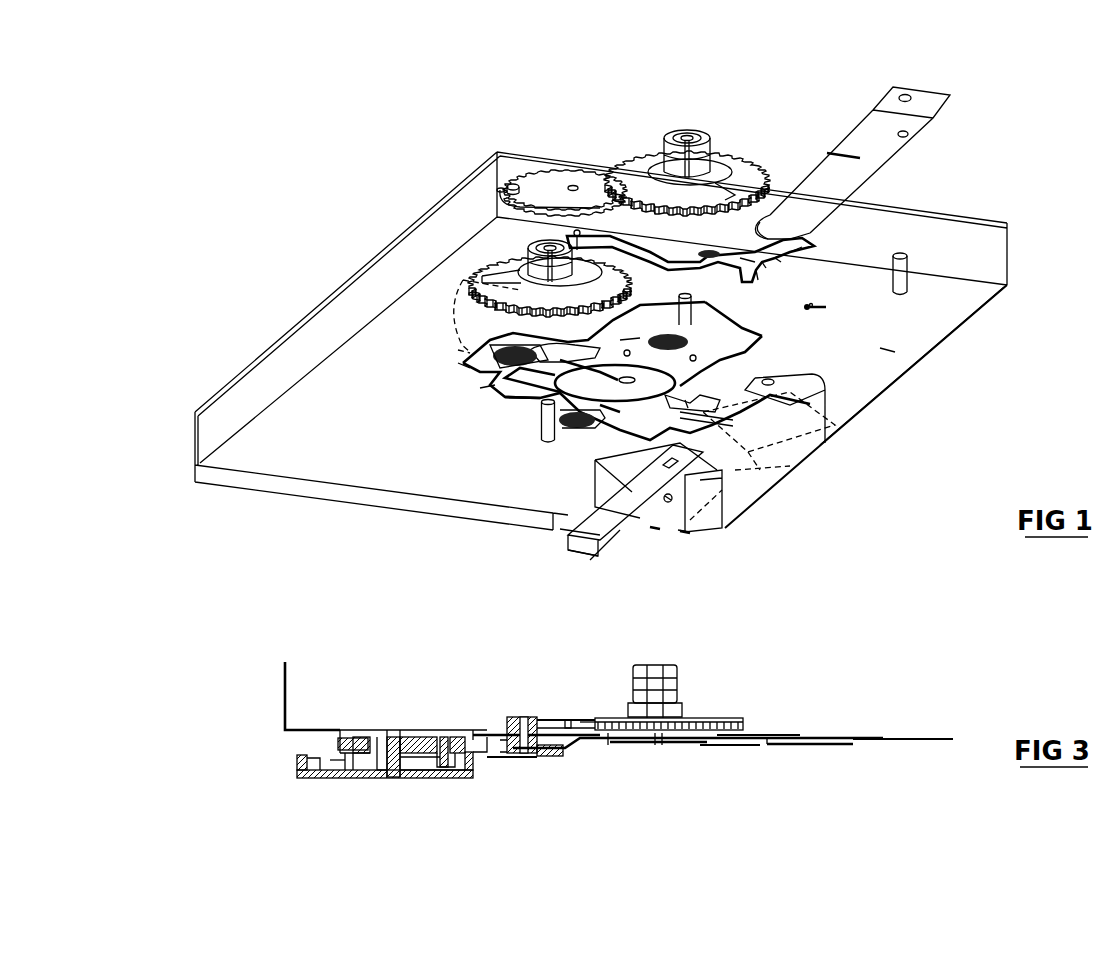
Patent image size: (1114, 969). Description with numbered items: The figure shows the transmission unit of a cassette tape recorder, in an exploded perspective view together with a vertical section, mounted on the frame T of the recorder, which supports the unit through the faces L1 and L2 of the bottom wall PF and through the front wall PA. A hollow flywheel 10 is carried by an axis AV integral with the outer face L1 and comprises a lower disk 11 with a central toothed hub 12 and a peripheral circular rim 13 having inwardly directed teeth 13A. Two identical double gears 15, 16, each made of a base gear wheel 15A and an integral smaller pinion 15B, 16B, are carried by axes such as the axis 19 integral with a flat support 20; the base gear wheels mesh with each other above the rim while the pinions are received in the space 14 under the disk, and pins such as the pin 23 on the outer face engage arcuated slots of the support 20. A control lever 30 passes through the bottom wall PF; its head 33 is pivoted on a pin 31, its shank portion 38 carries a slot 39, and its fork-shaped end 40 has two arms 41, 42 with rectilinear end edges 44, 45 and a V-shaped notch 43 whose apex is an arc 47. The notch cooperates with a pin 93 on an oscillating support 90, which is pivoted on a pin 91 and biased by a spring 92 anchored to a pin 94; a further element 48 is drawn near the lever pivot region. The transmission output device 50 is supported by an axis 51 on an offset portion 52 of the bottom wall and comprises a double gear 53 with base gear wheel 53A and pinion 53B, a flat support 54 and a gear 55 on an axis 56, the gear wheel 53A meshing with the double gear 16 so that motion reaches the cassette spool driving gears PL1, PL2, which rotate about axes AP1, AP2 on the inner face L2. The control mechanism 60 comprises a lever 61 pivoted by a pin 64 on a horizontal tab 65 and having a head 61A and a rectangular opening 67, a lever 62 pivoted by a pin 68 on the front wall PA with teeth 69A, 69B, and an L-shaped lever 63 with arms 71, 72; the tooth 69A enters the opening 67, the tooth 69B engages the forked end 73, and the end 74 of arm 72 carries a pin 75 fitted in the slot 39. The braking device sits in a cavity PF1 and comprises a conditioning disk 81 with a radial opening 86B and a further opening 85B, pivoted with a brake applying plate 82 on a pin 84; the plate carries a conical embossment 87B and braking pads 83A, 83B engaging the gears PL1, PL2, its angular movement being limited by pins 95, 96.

In FIG. 1, the frame T is at (997, 198).
In FIG. 1, the oscillating support 90 is at (895, 148).
In FIG. 1, the pin 93 is at (766, 224).
In FIG. 1, the spring 92 is at (845, 151).
In FIG. 1, the pin 94 is at (813, 303).
In FIG. 1, the pin 91 is at (902, 252).
In FIG. 1, the cassette spool driving gear PL2 is at (645, 158).
In FIG. 3, the cassette spool driving gear PL2 is at (660, 661).
In FIG. 1, the cassette spool driving gear PL1 is at (495, 262).
In FIG. 1, the flat support 54 is at (545, 187).
In FIG. 3, the flat support 54 is at (562, 718).
In FIG. 1, the axis 56 is at (577, 185).
In FIG. 3, the axis 56 is at (558, 718).
In FIG. 1, the axis 51 is at (516, 183).
In FIG. 3, the axis 51 is at (520, 757).
In FIG. 1, the gear 55 is at (610, 188).
In FIG. 3, the gear 55 is at (590, 718).
In FIG. 1, the pinion 53B is at (497, 186).
In FIG. 3, the pinion 53B is at (506, 728).
In FIG. 1, the base gear wheel 53A is at (483, 390).
In FIG. 3, the base gear wheel 53A is at (497, 757).
In FIG. 3, the double gear 53 is at (505, 762).
In FIG. 1, the offset portion 52 is at (494, 391).
In FIG. 3, the offset portion 52 is at (551, 758).
In FIG. 3, the transmission output device 50 is at (540, 716).
In FIG. 1, the pivot pin 48 is at (560, 234).
In FIG. 3, the pivot pin 48 is at (617, 740).
In FIG. 1, the shank portion 38 is at (633, 242).
In FIG. 1, the slot 39 is at (690, 251).
In FIG. 1, the fork-shaped end 40 is at (747, 256).
In FIG. 1, the arm 41 is at (812, 239).
In FIG. 1, the rectilinear end edge 44 is at (812, 244).
In FIG. 1, the V-shaped notch 43 is at (778, 260).
In FIG. 1, the circumferential arc 47 is at (770, 271).
In FIG. 1, the rectilinear end edge 45 is at (760, 287).
In FIG. 1, the arm 42 is at (761, 288).
In FIG. 1, the axis AP2 is at (680, 298).
In FIG. 1, the axis AP1 is at (544, 430).
In FIG. 1, the brake applying plate 82 is at (628, 335).
In FIG. 3, the brake applying plate 82 is at (667, 744).
In FIG. 1, the braking pad 83B is at (650, 330).
In FIG. 1, the braking pad 83A is at (605, 418).
In FIG. 1, the conical embossment 87B is at (720, 340).
In FIG. 1, the cavity PF1 is at (748, 348).
In FIG. 3, the cavity PF1 is at (723, 744).
In FIG. 1, the radial opening 86B is at (522, 340).
In FIG. 1, the pin 95 is at (624, 350).
In FIG. 1, the pin 96 is at (704, 356).
In FIG. 1, the pin 84 is at (590, 383).
In FIG. 3, the pin 84 is at (652, 742).
In FIG. 1, the head 33 is at (478, 303).
In FIG. 1, the pin 31 is at (458, 350).
In FIG. 3, the pin 31 is at (481, 732).
In FIG. 1, the conditioning disk 81 is at (518, 393).
In FIG. 3, the conditioning disk 81 is at (685, 744).
In FIG. 1, the spring 85B is at (562, 428).
In FIG. 1, the pin 75 is at (690, 400).
In FIG. 3, the pin 75 is at (742, 734).
In FIG. 1, the end 74 is at (712, 394).
In FIG. 1, the pin 64 is at (772, 380).
In FIG. 1, the horizontal tab 65 is at (811, 378).
In FIG. 1, the arm 72 is at (706, 433).
In FIG. 1, the lever 63 is at (797, 457).
In FIG. 3, the lever 63 is at (818, 748).
In FIG. 1, the arm 71 is at (772, 478).
In FIG. 1, the inner face L2 is at (890, 350).
In FIG. 3, the inner face L2 is at (317, 729).
In FIG. 3, the outer face L1 is at (937, 748).
In FIG. 1, the bottom wall PF is at (915, 393).
In FIG. 3, the bottom wall PF is at (300, 723).
In FIG. 1, the lever 61 is at (637, 493).
In FIG. 1, the rectangular opening 67 is at (620, 475).
In FIG. 1, the protruding tooth 69A is at (666, 464).
In FIG. 1, the lever 62 is at (705, 514).
In FIG. 1, the pin 68 is at (672, 499).
In FIG. 1, the front wall PA is at (722, 527).
In FIG. 1, the protruding tooth 69B is at (680, 536).
In FIG. 1, the head 61A is at (578, 548).
In FIG. 1, the forked end 73 is at (656, 548).
In FIG. 1, the control mechanism 60 is at (610, 565).
In FIG. 3, the peripheral circular rim 13 is at (298, 764).
In FIG. 3, the inwardly directed teeth 13A is at (318, 764).
In FIG. 3, the double gear 15 is at (330, 744).
In FIG. 3, the base gear wheel 15A is at (352, 737).
In FIG. 3, the pinion 15B is at (352, 763).
In FIG. 3, the space 14 is at (342, 762).
In FIG. 3, the flywheel 10 is at (366, 781).
In FIG. 3, the axis AV is at (385, 737).
In FIG. 3, the central toothed hub 12 is at (399, 737).
In FIG. 3, the lower disk 11 is at (414, 778).
In FIG. 3, the flat support 20 is at (421, 737).
In FIG. 3, the pin 23 is at (441, 737).
In FIG. 3, the axis 19 is at (454, 737).
In FIG. 3, the pinion 16B is at (441, 767).
In FIG. 3, the double gear 16 is at (483, 757).
In FIG. 3, the control lever 30 is at (578, 750).